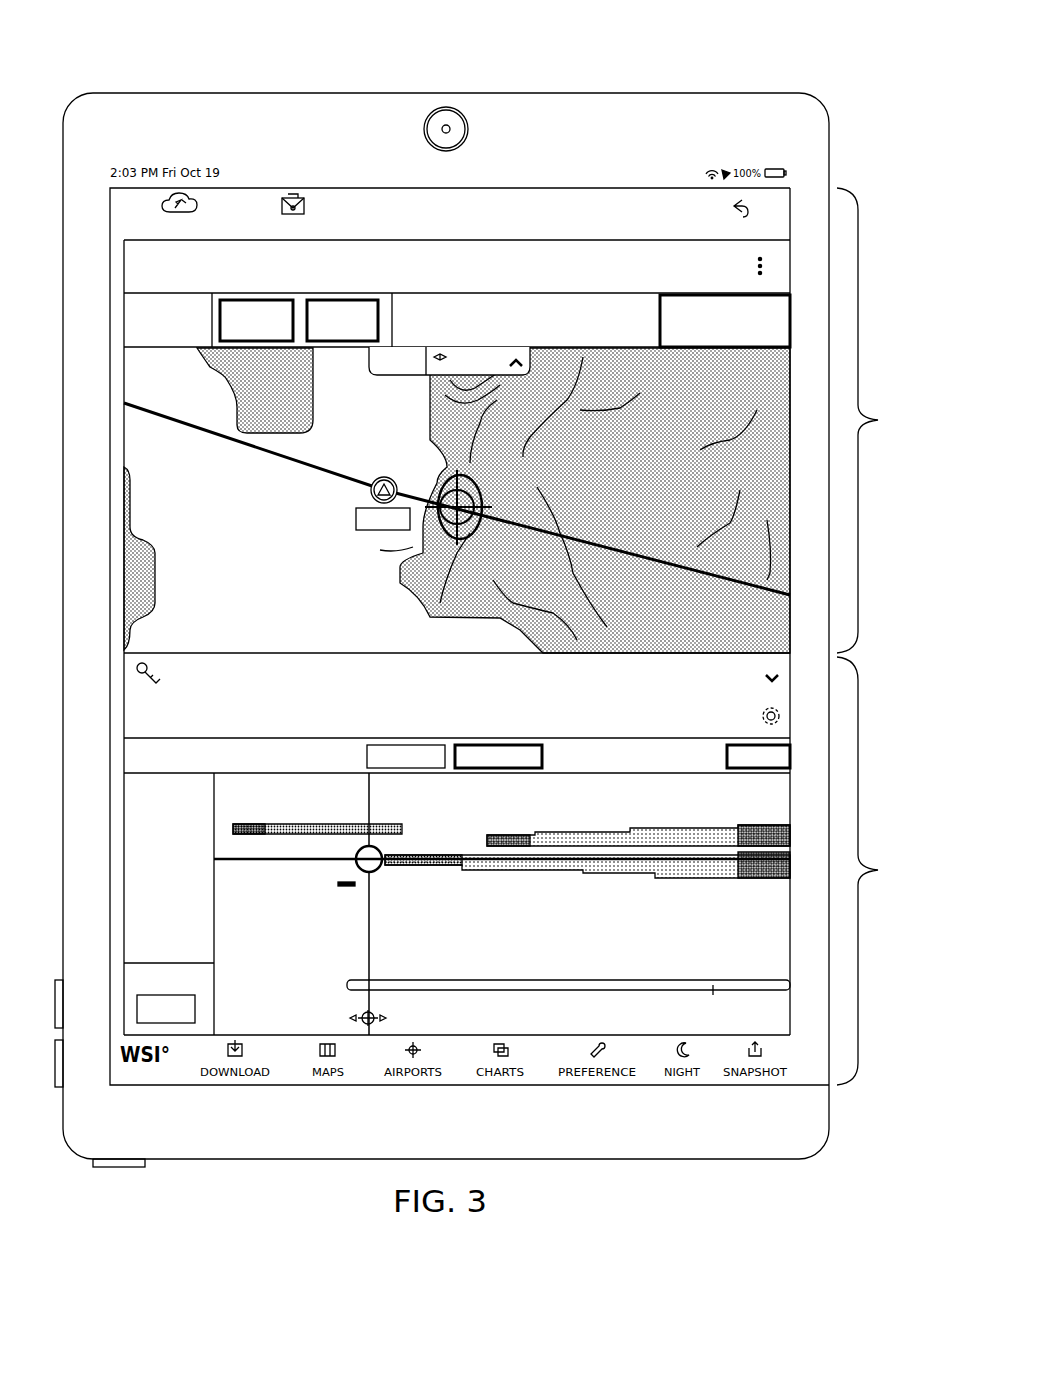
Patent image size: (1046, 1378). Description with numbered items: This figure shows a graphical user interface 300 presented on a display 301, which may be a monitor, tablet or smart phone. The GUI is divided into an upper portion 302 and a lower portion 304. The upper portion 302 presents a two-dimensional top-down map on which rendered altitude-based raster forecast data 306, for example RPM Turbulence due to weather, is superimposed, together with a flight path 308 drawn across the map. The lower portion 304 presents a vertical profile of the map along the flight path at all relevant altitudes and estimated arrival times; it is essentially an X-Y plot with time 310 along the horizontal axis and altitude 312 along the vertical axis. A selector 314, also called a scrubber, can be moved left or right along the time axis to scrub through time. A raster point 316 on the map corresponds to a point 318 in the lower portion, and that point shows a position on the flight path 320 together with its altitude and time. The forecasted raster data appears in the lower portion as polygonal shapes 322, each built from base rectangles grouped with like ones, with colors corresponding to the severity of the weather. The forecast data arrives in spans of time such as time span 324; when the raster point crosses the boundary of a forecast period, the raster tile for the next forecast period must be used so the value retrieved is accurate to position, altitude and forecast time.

The graphical user interface 300 is at (172, 48).
The display 301 is at (63, 259).
The upper portion 302 is at (523, 611).
The lower portion 304 is at (523, 869).
The rendered altitude-based raster forecast data 306 is at (400, 404).
The flight path 308 is at (280, 458).
The time 310 is at (536, 1020).
The altitude 312 is at (130, 872).
The selector 314 is at (373, 938).
The raster point 316 is at (436, 535).
The point 318 is at (383, 847).
The flight path 320 is at (283, 861).
The polygonal shapes 322 is at (695, 813).
The time span 324 is at (605, 980).